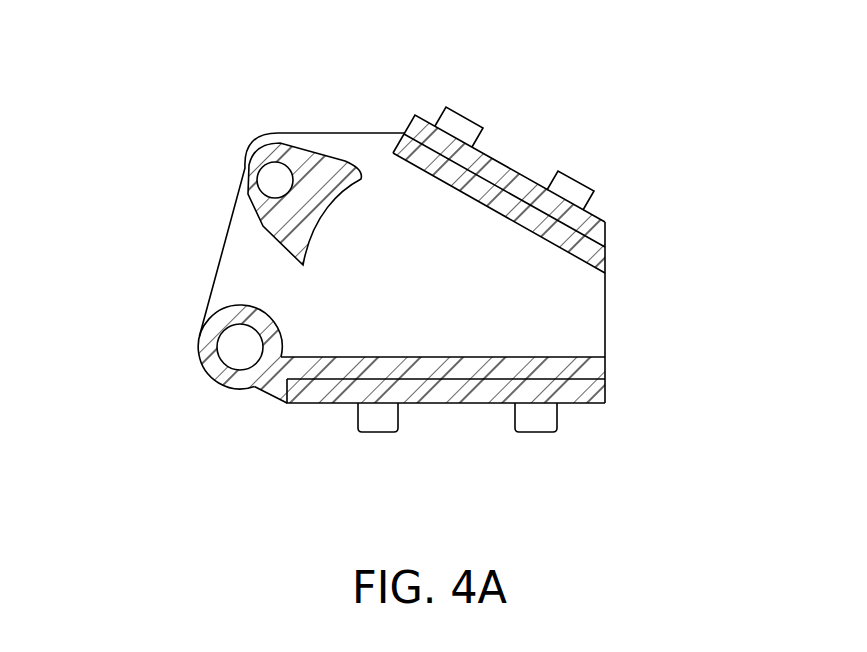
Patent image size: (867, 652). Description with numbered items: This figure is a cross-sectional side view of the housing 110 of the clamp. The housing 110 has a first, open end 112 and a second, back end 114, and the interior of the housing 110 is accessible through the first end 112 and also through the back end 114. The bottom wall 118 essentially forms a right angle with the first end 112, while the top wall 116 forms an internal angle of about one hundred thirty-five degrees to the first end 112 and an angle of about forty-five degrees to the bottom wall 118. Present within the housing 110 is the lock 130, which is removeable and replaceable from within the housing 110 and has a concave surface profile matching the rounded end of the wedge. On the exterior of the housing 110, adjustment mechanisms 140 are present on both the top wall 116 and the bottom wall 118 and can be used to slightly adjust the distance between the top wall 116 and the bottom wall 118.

The housing 110 is at (165, 103).
The first, open end 112 is at (612, 260).
The second, back end 114 is at (216, 283).
The top wall 116 is at (521, 168).
The bottom wall 118 is at (450, 404).
The lock 130 is at (266, 228).
The adjustment mechanism 140 is at (590, 185).